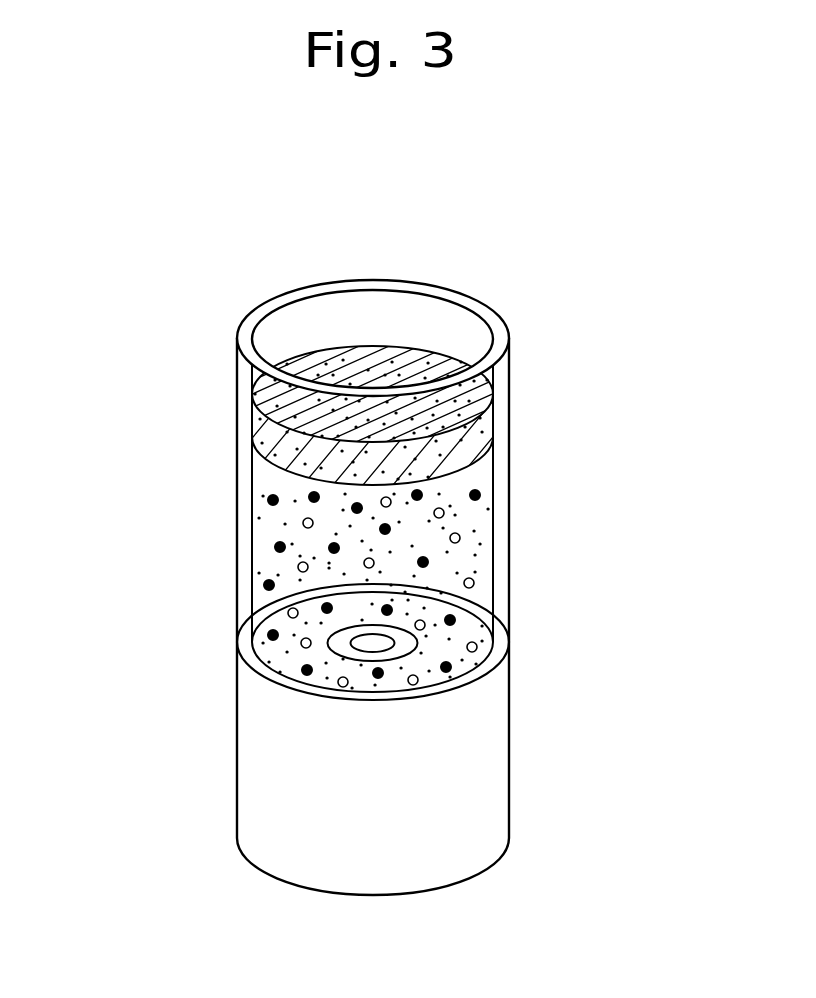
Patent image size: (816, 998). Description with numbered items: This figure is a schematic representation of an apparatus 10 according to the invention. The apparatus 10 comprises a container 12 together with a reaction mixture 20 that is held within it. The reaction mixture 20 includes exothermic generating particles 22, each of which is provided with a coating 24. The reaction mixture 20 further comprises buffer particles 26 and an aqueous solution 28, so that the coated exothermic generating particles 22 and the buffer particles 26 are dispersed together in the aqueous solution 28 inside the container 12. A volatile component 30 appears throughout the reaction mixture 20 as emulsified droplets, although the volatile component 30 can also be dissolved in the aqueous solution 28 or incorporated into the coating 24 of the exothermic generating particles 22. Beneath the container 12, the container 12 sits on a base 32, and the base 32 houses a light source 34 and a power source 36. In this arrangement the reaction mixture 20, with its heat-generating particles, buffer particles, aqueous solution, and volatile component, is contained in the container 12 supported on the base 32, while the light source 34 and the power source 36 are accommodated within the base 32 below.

The apparatus 10 is at (546, 278).
The container 12 is at (507, 457).
The reaction mixture 20 is at (470, 522).
The exothermic generating particles 22 is at (274, 549).
The coating 24 is at (264, 525).
The buffer particles 26 is at (477, 555).
The aqueous solution 28 is at (483, 377).
The volatile component 30 is at (477, 583).
The base 32 is at (460, 776).
The light source 34 is at (363, 652).
The power source 36 is at (328, 650).